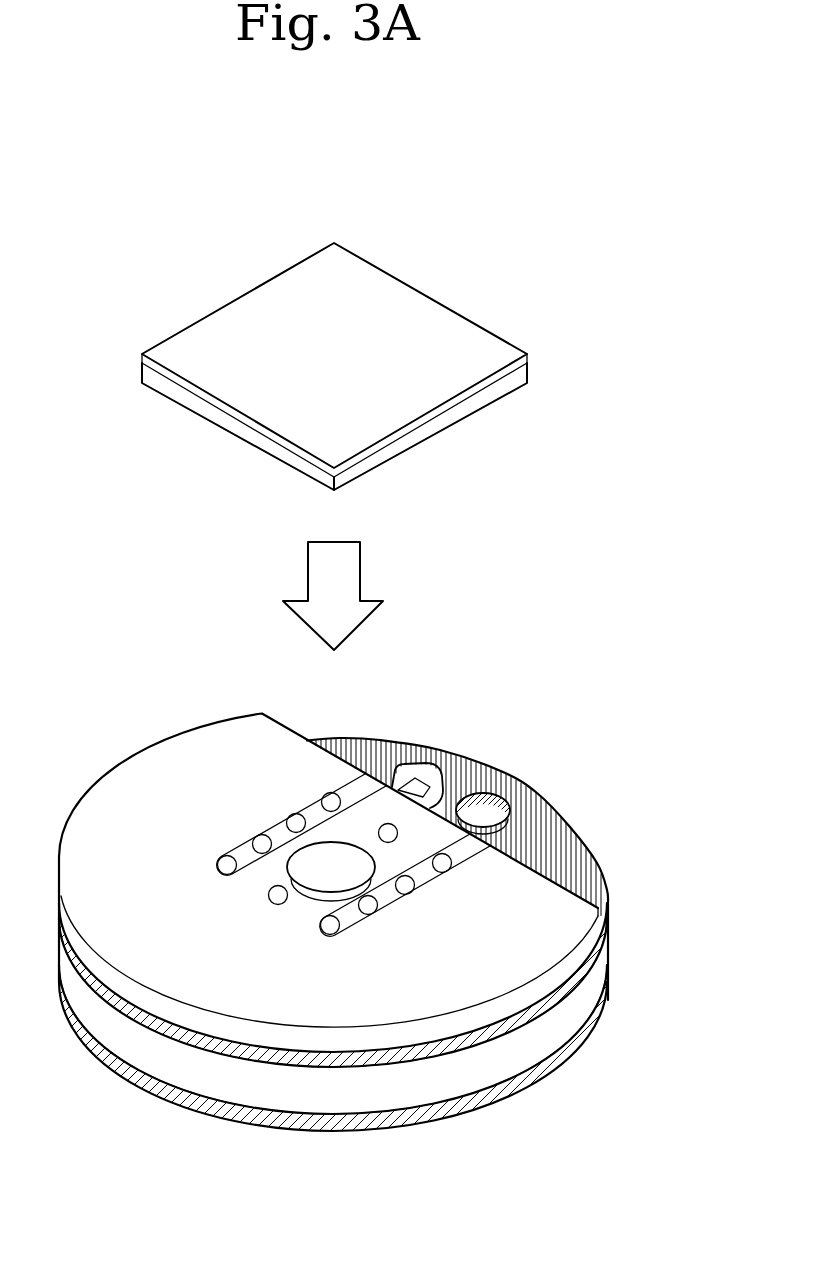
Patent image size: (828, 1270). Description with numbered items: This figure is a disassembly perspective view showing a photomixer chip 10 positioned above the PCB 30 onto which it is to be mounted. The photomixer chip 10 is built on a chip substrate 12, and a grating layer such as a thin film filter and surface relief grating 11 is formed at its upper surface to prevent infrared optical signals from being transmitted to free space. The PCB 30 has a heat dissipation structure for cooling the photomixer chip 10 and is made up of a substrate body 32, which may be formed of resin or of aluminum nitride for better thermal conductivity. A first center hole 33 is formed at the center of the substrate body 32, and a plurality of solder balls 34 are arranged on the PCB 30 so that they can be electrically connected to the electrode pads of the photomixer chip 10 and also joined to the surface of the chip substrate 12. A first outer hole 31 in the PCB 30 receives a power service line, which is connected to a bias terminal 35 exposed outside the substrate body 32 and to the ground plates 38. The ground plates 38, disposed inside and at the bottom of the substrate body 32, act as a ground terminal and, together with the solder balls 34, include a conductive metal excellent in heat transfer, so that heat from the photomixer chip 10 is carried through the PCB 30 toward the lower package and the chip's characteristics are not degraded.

The photomixer chip 10 is at (373, 351).
The thin film filter and surface relief grating 11 is at (380, 285).
The chip substrate 12 is at (522, 372).
The PCB 30 is at (377, 889).
The first outer hole 31 is at (488, 795).
The substrate body 32 is at (565, 1024).
The first center hole 33 is at (326, 857).
The solder balls 34 is at (223, 857).
The bias terminal 35 is at (414, 780).
The ground plates 38 is at (600, 1005).